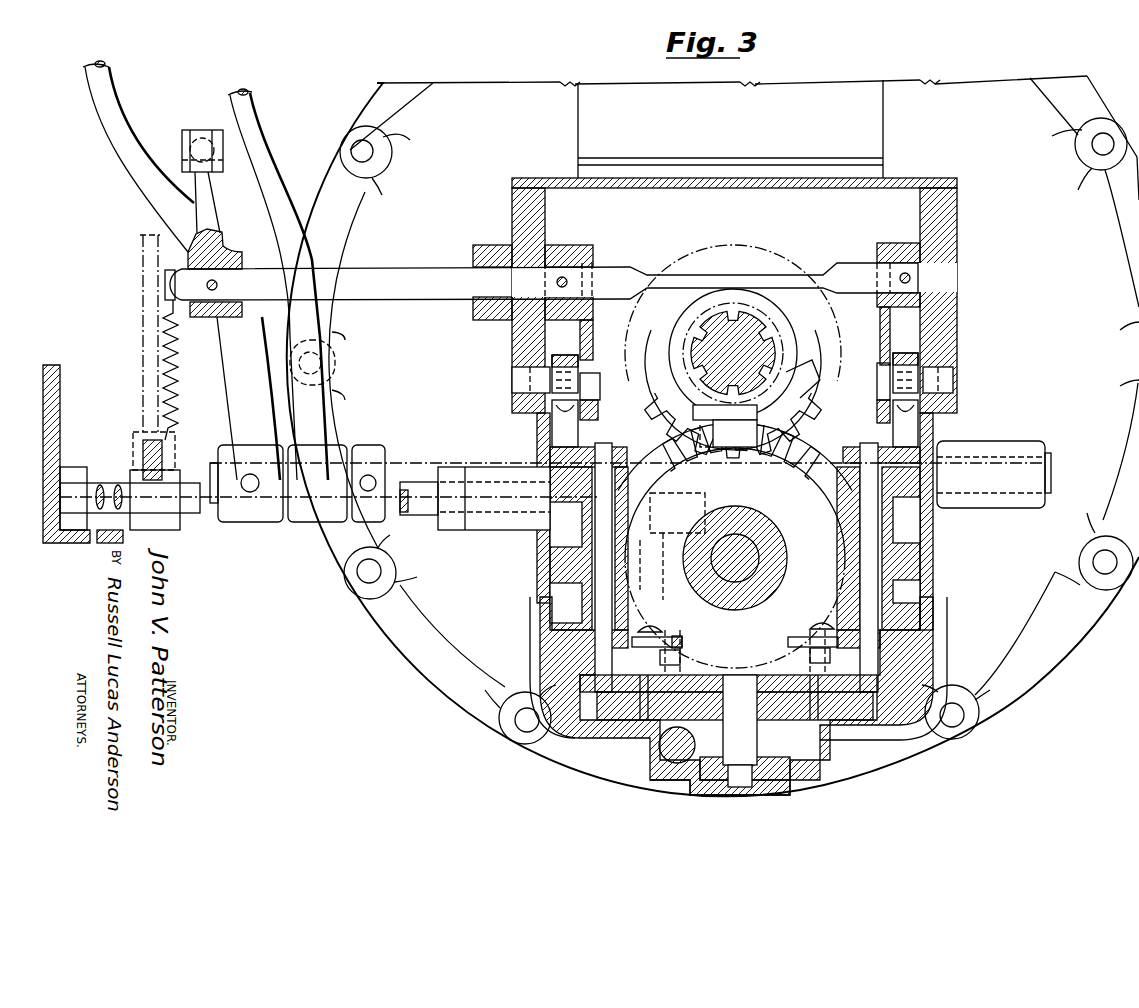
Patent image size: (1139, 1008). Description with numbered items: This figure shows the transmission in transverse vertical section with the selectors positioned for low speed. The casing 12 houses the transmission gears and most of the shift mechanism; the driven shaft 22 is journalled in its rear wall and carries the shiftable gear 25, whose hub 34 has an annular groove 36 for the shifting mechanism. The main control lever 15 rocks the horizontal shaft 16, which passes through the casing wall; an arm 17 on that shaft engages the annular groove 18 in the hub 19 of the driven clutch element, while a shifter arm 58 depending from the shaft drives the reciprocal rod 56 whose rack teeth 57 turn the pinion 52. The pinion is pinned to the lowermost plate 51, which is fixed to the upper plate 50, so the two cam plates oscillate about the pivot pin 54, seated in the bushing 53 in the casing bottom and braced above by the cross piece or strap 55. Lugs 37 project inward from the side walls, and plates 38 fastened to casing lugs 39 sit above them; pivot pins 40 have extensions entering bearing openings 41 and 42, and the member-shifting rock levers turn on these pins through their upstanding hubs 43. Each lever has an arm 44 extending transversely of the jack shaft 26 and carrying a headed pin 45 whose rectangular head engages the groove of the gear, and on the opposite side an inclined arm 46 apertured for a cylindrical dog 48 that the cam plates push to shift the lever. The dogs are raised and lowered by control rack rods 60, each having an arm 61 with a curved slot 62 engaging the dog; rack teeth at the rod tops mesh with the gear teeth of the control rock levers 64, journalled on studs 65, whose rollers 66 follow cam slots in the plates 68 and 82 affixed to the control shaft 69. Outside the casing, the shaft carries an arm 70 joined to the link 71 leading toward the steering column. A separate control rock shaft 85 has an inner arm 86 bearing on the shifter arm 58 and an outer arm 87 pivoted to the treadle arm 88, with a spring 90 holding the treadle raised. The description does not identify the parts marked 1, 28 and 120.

The bracket 1 is at (60, 385).
The casing 12 is at (515, 223).
The main control lever 15 is at (125, 118).
The shaft 16 is at (398, 470).
The arm 17 is at (795, 345).
The annular groove 18 is at (743, 352).
The hub 19 is at (770, 320).
The driven shaft 22 is at (730, 335).
The gear 25 is at (742, 248).
The jack shaft 26 is at (762, 560).
The gear 28 is at (800, 488).
The hub 34 is at (800, 375).
The annular groove 36 is at (805, 390).
The lower lever supporting lugs 37 is at (545, 655).
The plates 38 is at (542, 452).
The casing lugs 39 is at (560, 493).
The pivot pins 40 is at (580, 578).
The bearing openings 41 is at (870, 657).
The bearing openings 42 is at (605, 470).
The sleeves or hubs 43 is at (565, 538).
The arm 44 is at (662, 445).
The headed pin 45 is at (725, 426).
The arm 46 is at (680, 655).
The cylindrical dogs 48 is at (682, 660).
The plate 50 is at (870, 690).
The plate 51 is at (870, 710).
The pinion 52 is at (790, 765).
The bushing 53 is at (740, 762).
The pivot pin 54 is at (746, 735).
The cross piece or strap 55 is at (620, 690).
The rod 56 is at (665, 755).
The rack teeth 57 is at (690, 790).
The shifter arm 58 is at (663, 539).
The control rack rods 60 is at (560, 426).
The arm 61 is at (682, 642).
The curved slot 62 is at (660, 620).
The control rock levers 64 is at (515, 363).
The studs 65 is at (515, 383).
The cam followers or rollers 66 is at (596, 375).
The plate 68 is at (590, 340).
The control shaft 69 is at (613, 270).
The arm 70 is at (212, 188).
The link 71 is at (200, 137).
The plate 82 is at (880, 325).
The control rock shaft 85 is at (118, 485).
The arm 86 is at (651, 566).
The arm 87 is at (165, 458).
The treadle arm 88 is at (150, 285).
The spring 90 is at (178, 370).
The cover 120 is at (733, 190).